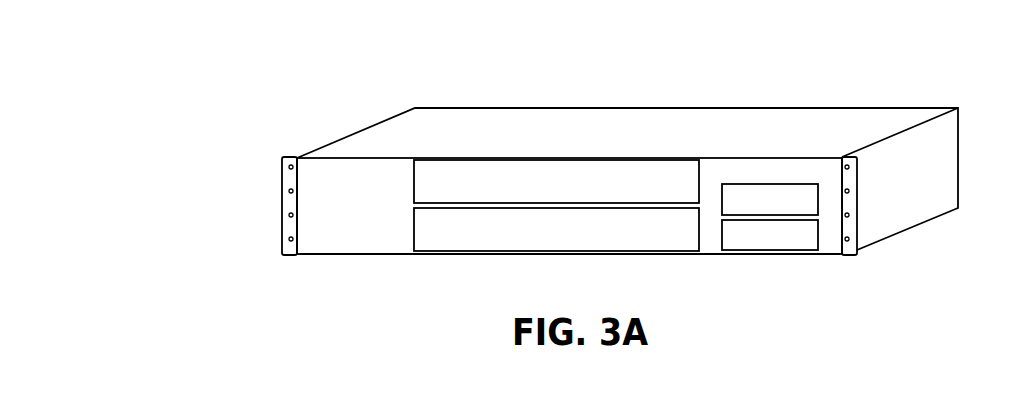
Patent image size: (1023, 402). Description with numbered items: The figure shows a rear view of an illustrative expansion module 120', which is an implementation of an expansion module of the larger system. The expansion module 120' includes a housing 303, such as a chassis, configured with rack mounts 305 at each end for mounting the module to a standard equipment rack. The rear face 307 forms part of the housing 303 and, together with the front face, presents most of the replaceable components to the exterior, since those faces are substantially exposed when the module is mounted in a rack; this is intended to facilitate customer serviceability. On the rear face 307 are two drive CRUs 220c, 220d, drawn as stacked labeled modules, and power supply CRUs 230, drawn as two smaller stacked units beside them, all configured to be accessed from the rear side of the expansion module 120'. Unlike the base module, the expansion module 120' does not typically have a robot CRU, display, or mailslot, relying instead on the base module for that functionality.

The expansion module 120' is at (963, 50).
The housing 303 is at (383, 122).
The rack mounts 305 is at (282, 189).
The rear face 307 is at (363, 242).
The drive CRU 220c is at (556, 181).
The drive CRU 220d is at (556, 229).
The power supply CRUs 230 is at (818, 234).